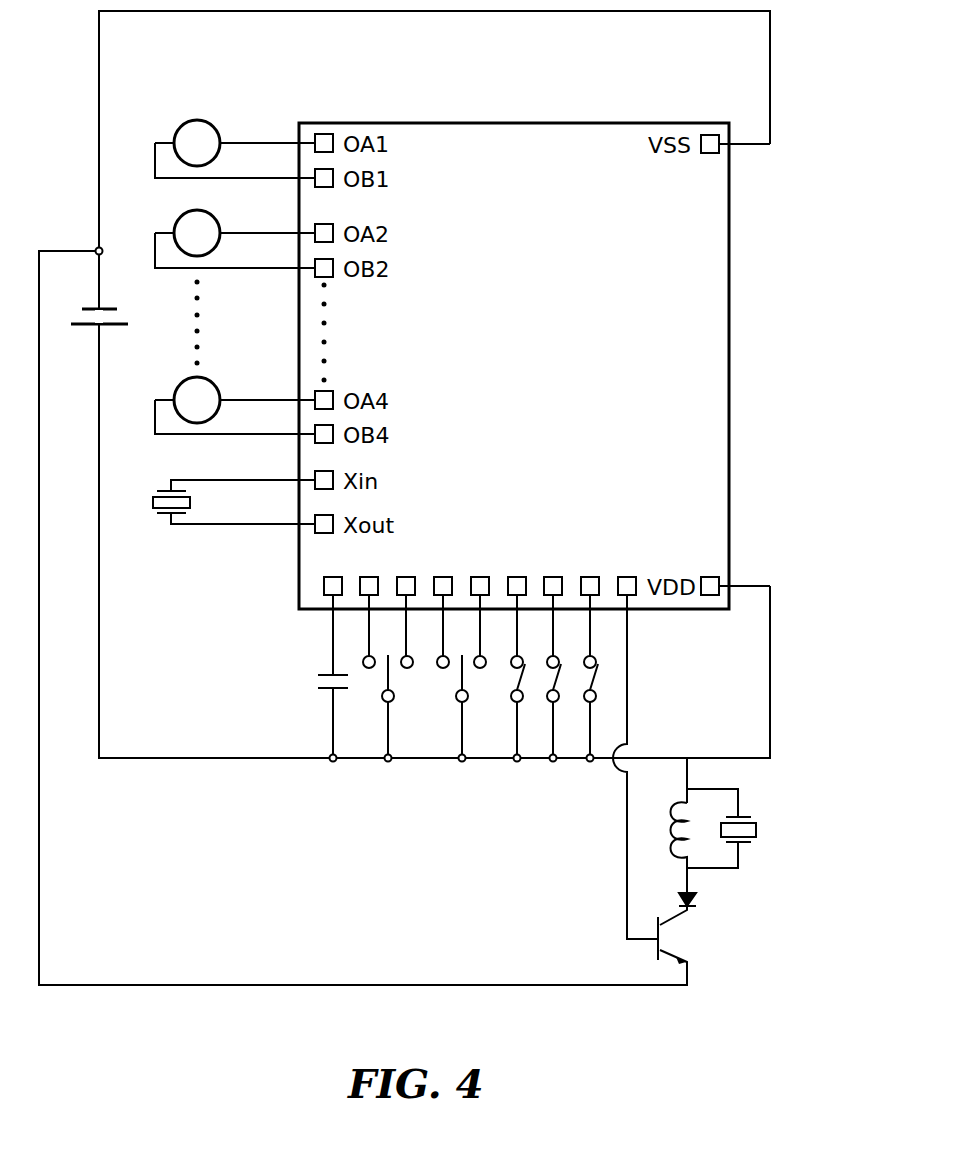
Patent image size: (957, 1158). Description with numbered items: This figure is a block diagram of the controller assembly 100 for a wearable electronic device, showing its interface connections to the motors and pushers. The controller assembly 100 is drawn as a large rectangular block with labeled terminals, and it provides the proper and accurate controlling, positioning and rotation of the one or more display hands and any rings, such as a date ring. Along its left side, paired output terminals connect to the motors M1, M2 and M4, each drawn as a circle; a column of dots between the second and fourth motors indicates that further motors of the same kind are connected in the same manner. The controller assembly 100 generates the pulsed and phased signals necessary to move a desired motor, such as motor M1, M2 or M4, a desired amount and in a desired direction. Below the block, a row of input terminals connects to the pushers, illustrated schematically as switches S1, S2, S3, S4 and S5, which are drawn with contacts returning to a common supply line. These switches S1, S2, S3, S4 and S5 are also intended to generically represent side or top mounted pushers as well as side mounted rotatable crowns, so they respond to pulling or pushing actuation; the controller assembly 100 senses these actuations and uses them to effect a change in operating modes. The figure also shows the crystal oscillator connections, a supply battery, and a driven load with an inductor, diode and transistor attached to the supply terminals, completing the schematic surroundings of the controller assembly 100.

The controller assembly 100 is at (520, 123).
The motor M1 is at (213, 122).
The motor M2 is at (213, 211).
The motor M4 is at (213, 378).
The switch S1 is at (388, 676).
The switch S2 is at (462, 676).
The switch S3 is at (517, 731).
The switch S4 is at (553, 731).
The switch S5 is at (590, 731).